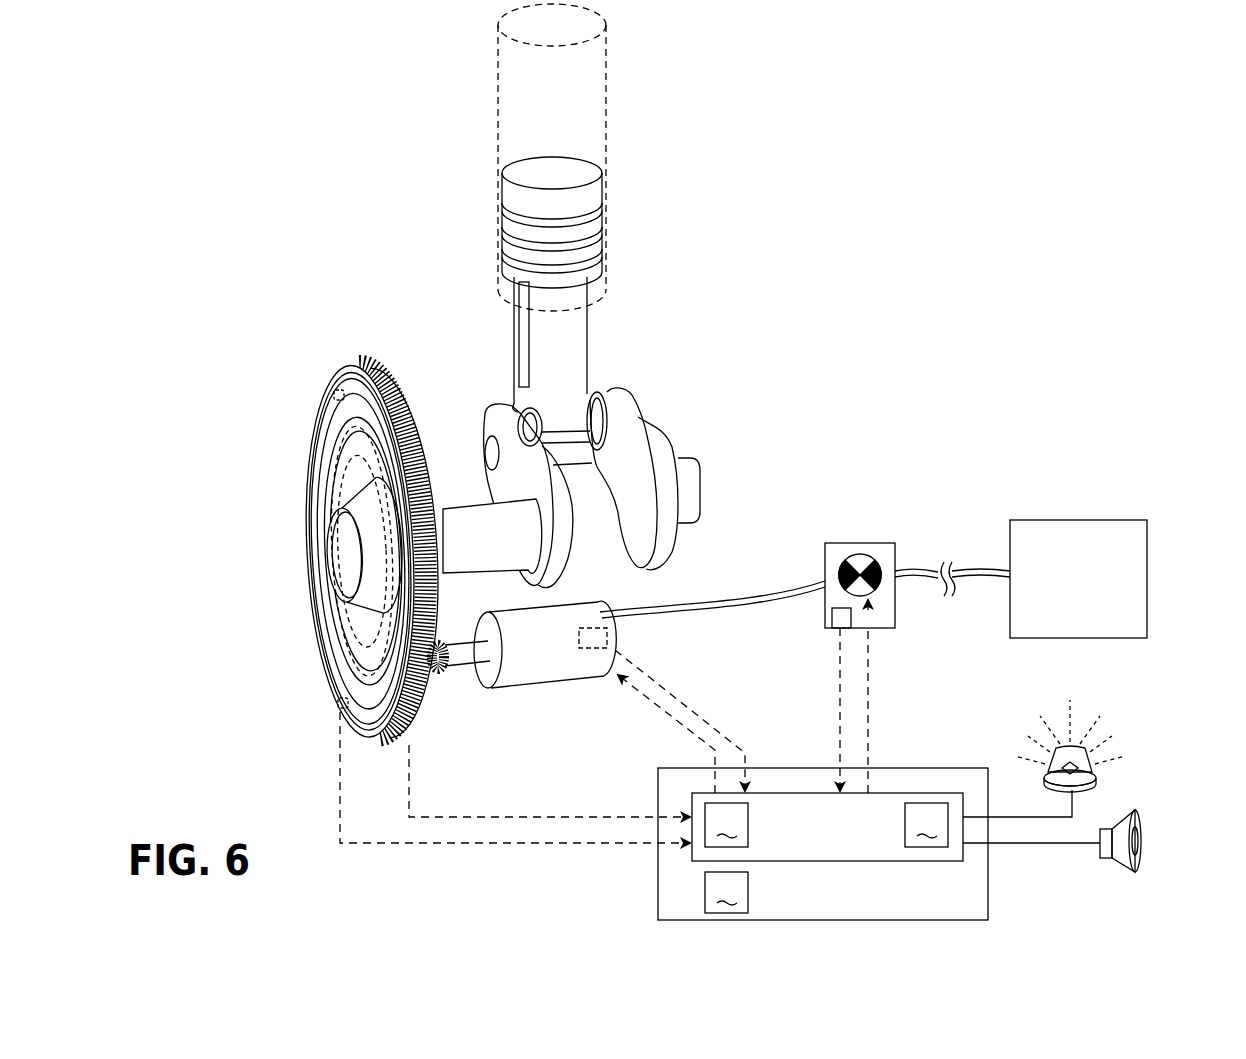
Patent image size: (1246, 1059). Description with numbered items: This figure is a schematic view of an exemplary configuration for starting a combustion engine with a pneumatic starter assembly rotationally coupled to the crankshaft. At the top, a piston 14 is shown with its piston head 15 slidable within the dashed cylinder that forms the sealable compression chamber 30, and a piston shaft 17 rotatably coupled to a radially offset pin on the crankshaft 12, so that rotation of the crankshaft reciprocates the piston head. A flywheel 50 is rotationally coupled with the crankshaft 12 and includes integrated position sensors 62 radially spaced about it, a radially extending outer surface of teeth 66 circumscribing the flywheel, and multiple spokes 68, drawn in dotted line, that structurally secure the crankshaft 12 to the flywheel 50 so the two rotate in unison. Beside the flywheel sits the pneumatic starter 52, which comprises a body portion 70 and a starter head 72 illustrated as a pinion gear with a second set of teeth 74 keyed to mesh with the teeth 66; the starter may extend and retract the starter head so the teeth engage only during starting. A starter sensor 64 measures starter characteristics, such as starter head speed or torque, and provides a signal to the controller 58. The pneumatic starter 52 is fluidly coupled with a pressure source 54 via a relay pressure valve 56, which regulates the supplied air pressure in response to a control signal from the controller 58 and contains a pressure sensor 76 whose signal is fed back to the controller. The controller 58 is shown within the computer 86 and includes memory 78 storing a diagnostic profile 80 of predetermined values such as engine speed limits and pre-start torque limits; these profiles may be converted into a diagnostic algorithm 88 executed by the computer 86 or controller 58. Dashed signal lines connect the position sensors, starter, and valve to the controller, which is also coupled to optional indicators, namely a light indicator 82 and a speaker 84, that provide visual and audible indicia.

The compression chamber 30 is at (545, 118).
The piston head 15 is at (588, 226).
The piston 14 is at (598, 363).
The piston shaft 17 is at (570, 362).
The crankshaft 12 is at (470, 527).
The flywheel 50 is at (323, 513).
The teeth 66 is at (383, 367).
The position sensors 62 is at (332, 380).
The spokes 68 is at (345, 500).
The starter head 72 is at (452, 668).
The second set of teeth 74 is at (448, 688).
The pneumatic starter 52 is at (545, 678).
The body portion 70 is at (568, 660).
The starter sensor 64 is at (606, 632).
The relay pressure valve 56 is at (832, 579).
The pressure sensor 76 is at (826, 612).
The pressure source 54 is at (1045, 520).
The controller 58 is at (831, 794).
The diagnostic profile 80 is at (726, 825).
The memory 78 is at (898, 793).
The diagnostic algorithm 88 is at (726, 892).
The computer 86 is at (869, 823).
The light indicator 82 is at (1086, 763).
The speaker 84 is at (1137, 856).